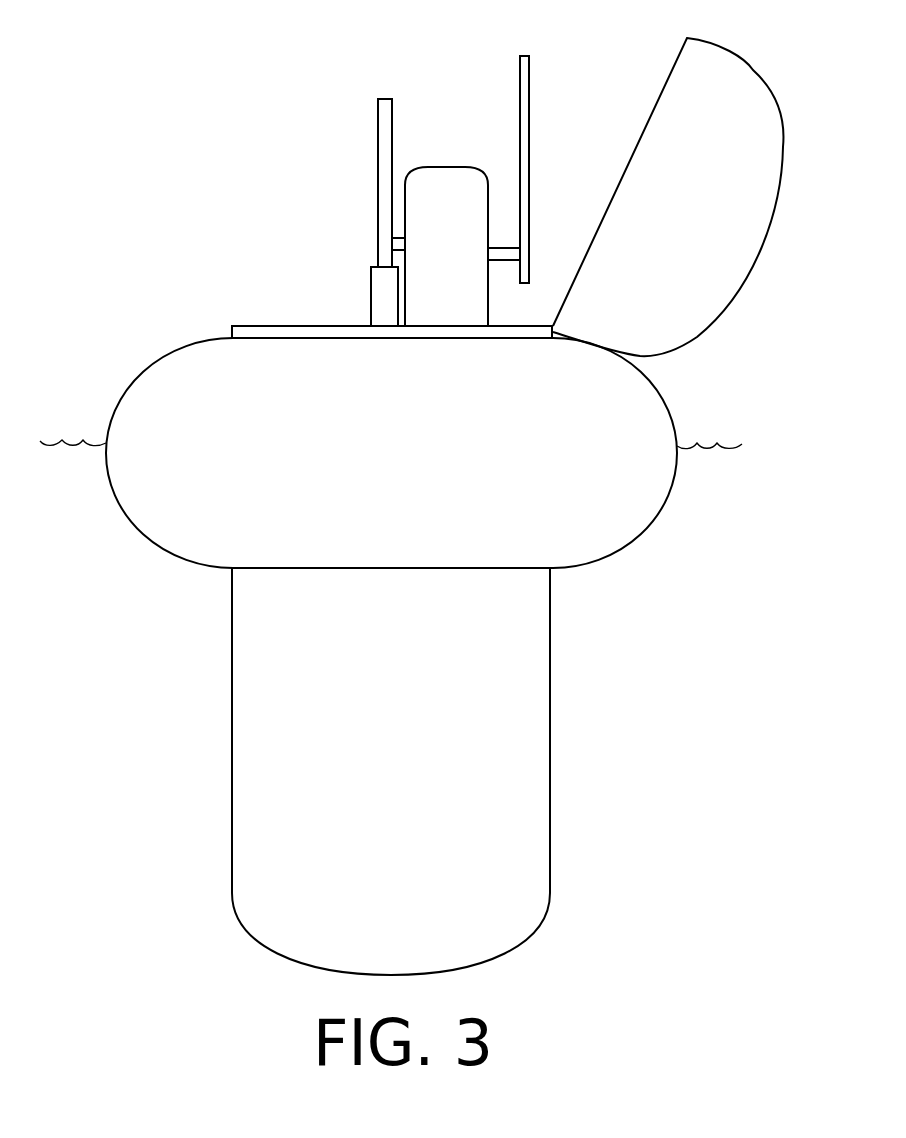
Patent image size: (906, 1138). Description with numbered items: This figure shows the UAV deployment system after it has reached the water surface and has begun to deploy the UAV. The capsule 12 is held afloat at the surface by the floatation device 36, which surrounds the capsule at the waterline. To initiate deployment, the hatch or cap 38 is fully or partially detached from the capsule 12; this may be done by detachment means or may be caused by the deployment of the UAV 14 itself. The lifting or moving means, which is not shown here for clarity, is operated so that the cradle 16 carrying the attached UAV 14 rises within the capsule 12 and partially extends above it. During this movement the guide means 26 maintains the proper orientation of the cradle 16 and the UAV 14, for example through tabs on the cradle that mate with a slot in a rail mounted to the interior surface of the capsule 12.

The capsule 12 is at (232, 793).
The UAV 14 is at (440, 165).
The cradle 16 is at (378, 181).
The guide means 26 is at (371, 293).
The floatation device 36 is at (645, 528).
The cap 38 is at (727, 298).